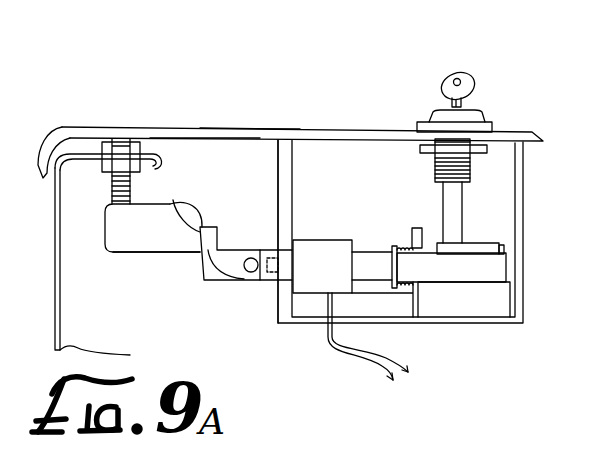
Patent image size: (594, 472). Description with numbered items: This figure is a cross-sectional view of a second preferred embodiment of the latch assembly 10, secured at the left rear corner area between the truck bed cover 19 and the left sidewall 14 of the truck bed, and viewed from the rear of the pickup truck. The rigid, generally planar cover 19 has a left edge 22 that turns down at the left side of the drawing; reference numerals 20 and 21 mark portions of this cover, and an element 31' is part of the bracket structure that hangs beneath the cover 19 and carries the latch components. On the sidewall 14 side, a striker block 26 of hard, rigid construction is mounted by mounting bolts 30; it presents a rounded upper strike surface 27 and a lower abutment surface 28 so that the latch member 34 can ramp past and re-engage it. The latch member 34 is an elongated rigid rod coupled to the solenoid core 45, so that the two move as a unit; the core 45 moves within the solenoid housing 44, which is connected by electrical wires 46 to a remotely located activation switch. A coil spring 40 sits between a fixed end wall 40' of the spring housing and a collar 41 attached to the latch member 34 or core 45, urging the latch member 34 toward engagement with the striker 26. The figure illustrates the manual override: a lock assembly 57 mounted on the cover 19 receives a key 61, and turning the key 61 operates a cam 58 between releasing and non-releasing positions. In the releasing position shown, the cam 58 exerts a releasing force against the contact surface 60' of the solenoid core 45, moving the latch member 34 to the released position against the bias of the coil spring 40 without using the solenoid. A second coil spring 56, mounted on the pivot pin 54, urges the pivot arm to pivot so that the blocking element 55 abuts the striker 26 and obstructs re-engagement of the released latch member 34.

The latch assembly 10 is at (320, 126).
The left sidewall 14 is at (55, 294).
The truck bed cover 19 is at (193, 128).
The underside of plate 20 is at (188, 140).
The plate upper surface 21 is at (265, 128).
The left edge 22 is at (58, 125).
The striker block 26 is at (105, 228).
The upper strike surface 27 is at (108, 178).
The lower abutment surface 28 is at (116, 252).
The mounting bolts 30 is at (111, 192).
The housing wall 31' is at (400, 231).
The latch member 34 is at (259, 282).
The coil spring 40 is at (418, 236).
The end wall 40' is at (464, 299).
The collar 41 is at (392, 248).
The solenoid housing 44 is at (330, 243).
The solenoid core 45 is at (483, 276).
The electrical wires 46 is at (345, 362).
The pivot pin 54 is at (249, 273).
The blocking element 55 is at (173, 204).
The coil spring 56 is at (247, 251).
The lock assembly 57 is at (498, 125).
The cam 58 is at (447, 247).
The contact surface 60' is at (502, 240).
The key 61 is at (479, 91).